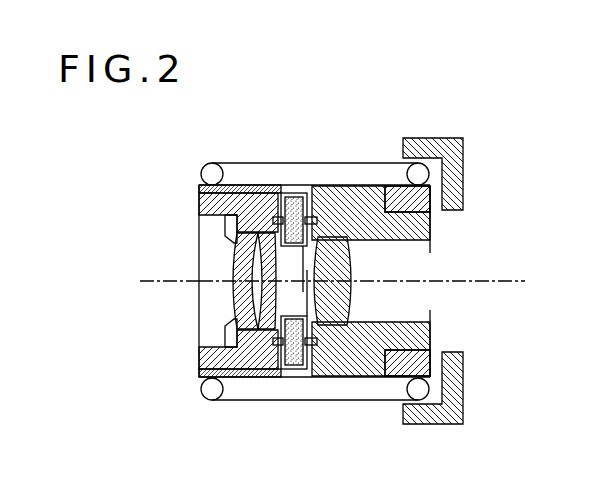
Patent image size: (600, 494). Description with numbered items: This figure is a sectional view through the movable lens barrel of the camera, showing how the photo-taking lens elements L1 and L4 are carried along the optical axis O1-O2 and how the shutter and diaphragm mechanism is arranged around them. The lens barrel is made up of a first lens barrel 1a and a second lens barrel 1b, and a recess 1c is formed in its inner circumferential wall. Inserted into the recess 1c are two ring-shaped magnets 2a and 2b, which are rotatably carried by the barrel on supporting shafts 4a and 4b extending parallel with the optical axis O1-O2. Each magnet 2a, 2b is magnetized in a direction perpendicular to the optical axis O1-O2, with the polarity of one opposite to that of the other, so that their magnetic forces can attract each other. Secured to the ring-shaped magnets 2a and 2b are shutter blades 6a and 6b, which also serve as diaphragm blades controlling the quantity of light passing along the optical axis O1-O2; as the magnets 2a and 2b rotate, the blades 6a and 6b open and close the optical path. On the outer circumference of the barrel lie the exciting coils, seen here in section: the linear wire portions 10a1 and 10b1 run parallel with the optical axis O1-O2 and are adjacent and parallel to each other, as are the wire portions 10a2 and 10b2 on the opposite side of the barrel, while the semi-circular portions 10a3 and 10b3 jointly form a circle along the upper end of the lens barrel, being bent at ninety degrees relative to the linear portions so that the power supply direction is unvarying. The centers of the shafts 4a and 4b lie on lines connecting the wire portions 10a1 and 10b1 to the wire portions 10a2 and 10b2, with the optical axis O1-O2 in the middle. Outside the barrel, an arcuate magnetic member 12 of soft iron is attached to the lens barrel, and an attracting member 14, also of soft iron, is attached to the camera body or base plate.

The first lens barrel 1a is at (199, 203).
The second lens barrel 1b is at (432, 233).
The recess 1c is at (303, 369).
The ring-shaped magnet 2a is at (303, 186).
The ring-shaped magnet 2b is at (290, 376).
The supporting shaft 4a is at (267, 186).
The supporting shaft 4b is at (315, 377).
The shutter blade 6a is at (303, 267).
The shutter blade 6b is at (307, 298).
The wire portion 10a1 is at (326, 136).
The wire portion 10b1 is at (368, 170).
The wire portion 10a2 is at (316, 431).
The wire portion 10b2 is at (378, 400).
The semi-circular portion 10a3 is at (296, 260).
The semi-circular portion 10b3 is at (208, 162).
The arcuate magnetic member 12 is at (432, 364).
The attracting member 14 is at (466, 177).
The photo-taking lens L1 is at (237, 265).
The photo-taking lens L4 is at (357, 260).
The optical axis O1 is at (158, 284).
The optical axis O2 is at (374, 284).